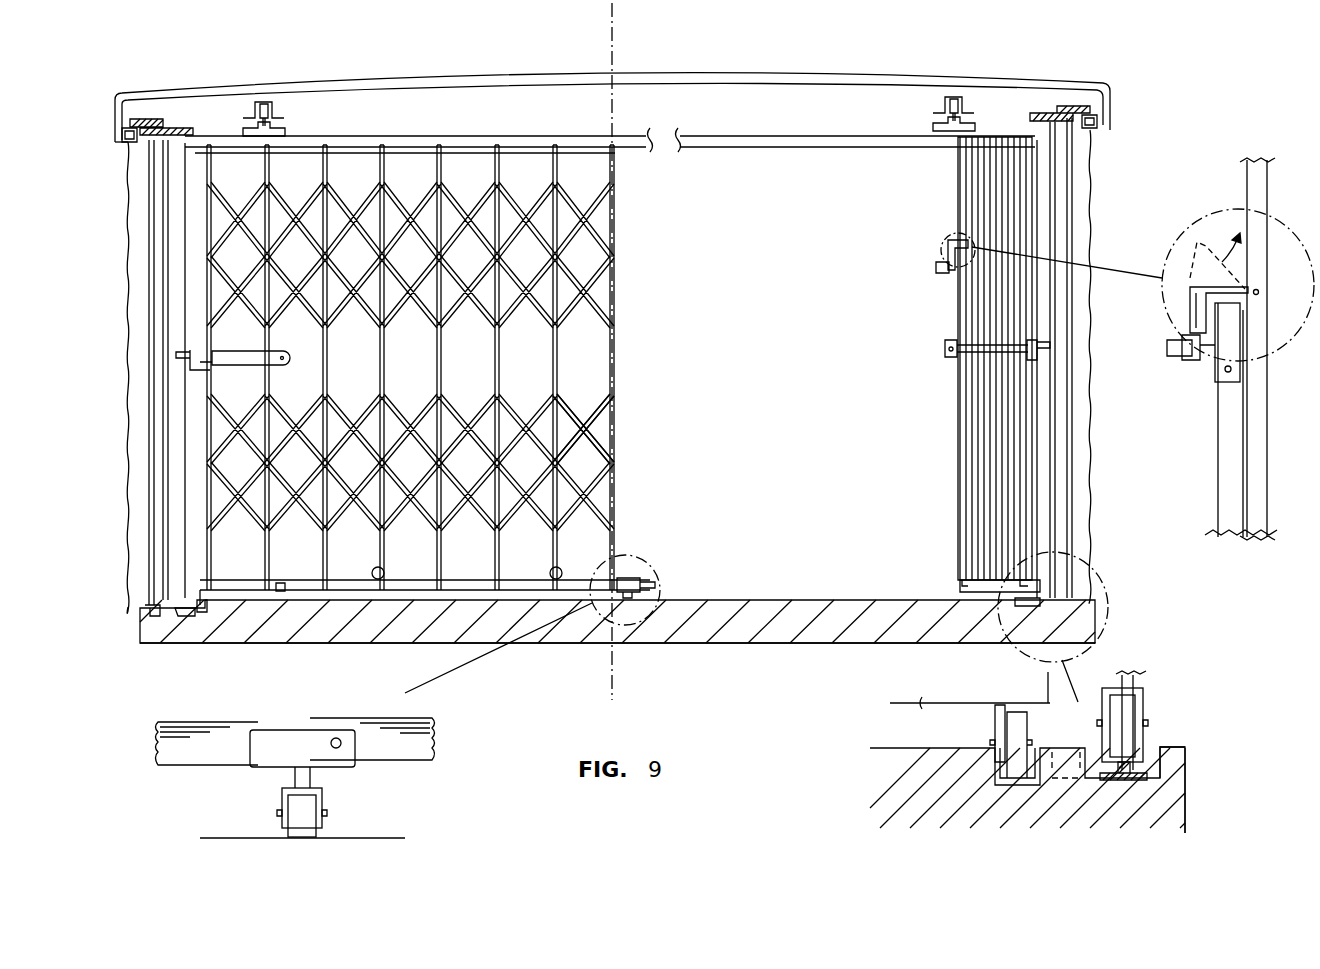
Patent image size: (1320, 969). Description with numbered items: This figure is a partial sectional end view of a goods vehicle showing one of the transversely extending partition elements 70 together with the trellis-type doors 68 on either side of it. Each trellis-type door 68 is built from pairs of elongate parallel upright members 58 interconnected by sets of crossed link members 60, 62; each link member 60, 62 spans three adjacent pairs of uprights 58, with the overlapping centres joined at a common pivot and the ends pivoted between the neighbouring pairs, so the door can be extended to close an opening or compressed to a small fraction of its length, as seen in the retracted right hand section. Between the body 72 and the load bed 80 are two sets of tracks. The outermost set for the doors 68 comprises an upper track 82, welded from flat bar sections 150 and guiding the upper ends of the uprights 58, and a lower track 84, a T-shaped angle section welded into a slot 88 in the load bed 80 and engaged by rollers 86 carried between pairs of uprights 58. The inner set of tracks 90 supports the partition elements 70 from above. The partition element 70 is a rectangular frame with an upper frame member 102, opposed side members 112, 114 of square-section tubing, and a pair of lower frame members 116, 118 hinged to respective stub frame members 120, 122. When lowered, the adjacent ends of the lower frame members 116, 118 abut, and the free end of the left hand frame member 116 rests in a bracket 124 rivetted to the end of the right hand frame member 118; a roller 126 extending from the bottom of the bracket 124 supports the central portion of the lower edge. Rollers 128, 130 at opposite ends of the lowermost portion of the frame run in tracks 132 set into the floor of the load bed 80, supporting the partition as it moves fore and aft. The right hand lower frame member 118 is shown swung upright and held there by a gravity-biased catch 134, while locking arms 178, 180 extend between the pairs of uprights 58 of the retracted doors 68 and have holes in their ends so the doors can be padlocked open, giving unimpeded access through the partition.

The upright members 58 is at (160, 400).
The link member 60 is at (588, 440).
The link member 62 is at (590, 470).
The trellis-type doors 68 is at (157, 486).
The partition elements 70 is at (517, 128).
The body 72 is at (118, 104).
The load bed 80 is at (180, 650).
The upper track 82 is at (128, 142).
The lower track 84 is at (140, 624).
The rollers 86 is at (170, 582).
The slot 88 is at (1185, 770).
The tracks 90 is at (285, 101).
The upper frame member 102 is at (735, 138).
The side member 112 is at (190, 296).
The side member 114 is at (1035, 182).
The lower frame member 116 is at (354, 584).
The lower frame member 118 is at (960, 440).
The stub frame member 120 is at (244, 584).
The stub frame member 122 is at (1000, 592).
The bracket 124 is at (1220, 365).
The roller 126 is at (322, 820).
The roller 128 is at (208, 620).
The roller 130 is at (1015, 605).
The tracks 132 is at (1043, 750).
The gravity-biased catch 134 is at (1190, 302).
The flat bar sections 150 is at (180, 118).
The locking arm 178 is at (250, 368).
The locking arm 180 is at (945, 348).